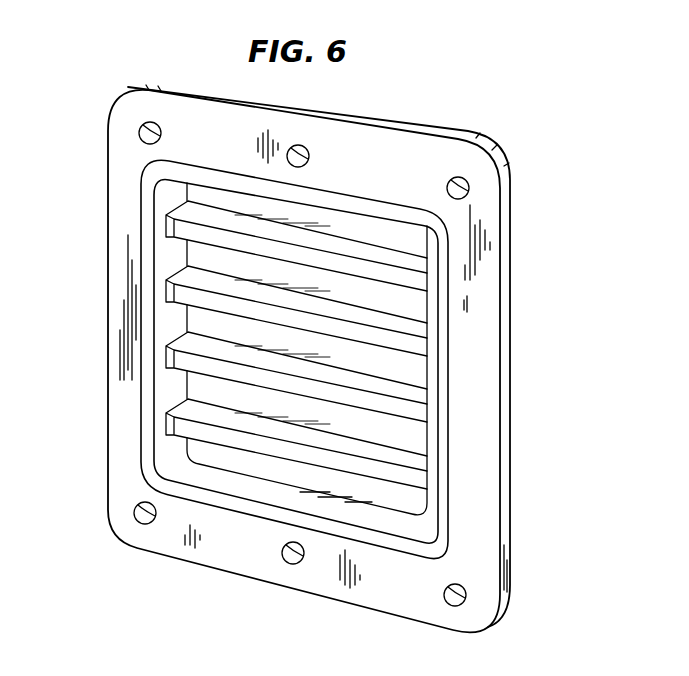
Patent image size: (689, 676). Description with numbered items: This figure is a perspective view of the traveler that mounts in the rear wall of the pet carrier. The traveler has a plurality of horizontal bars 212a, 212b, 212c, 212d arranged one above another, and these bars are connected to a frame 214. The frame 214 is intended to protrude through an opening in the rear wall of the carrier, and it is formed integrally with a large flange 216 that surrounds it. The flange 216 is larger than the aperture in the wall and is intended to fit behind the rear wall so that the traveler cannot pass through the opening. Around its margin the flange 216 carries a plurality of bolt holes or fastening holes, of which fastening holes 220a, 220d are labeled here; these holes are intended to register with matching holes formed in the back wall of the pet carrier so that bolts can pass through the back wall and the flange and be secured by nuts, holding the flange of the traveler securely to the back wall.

The flange 216 is at (181, 127).
The frame 214 is at (250, 188).
The horizontal bar 212a is at (340, 246).
The horizontal bar 212b is at (413, 327).
The horizontal bar 212c is at (418, 394).
The horizontal bar 212d is at (413, 463).
The fastening hole 220a is at (139, 131).
The fastening hole 220d is at (134, 509).